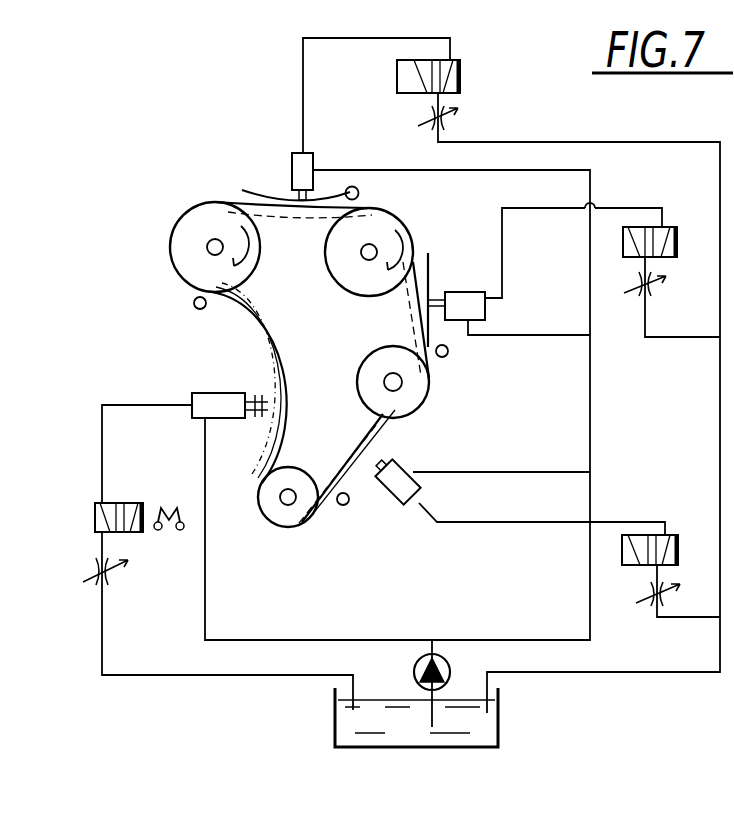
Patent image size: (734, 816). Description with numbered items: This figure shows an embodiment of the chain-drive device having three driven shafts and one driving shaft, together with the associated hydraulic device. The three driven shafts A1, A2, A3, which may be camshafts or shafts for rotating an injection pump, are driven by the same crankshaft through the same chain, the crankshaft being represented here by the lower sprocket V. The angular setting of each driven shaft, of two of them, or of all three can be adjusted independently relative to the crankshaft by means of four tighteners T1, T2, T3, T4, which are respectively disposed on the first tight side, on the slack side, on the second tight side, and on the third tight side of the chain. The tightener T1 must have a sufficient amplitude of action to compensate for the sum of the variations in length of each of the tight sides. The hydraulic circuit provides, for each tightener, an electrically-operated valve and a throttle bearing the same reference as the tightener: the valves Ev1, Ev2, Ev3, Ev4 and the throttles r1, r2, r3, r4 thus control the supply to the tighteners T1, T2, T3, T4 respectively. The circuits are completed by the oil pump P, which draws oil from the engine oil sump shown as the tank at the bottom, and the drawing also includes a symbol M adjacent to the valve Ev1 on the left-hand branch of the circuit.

The driven shaft A1 is at (408, 403).
The driven shaft A2 is at (355, 281).
The driven shaft A3 is at (206, 278).
The roller V is at (281, 519).
The tightener T1 is at (230, 393).
The tightener T2 is at (395, 494).
The tightener T3 is at (456, 290).
The tightener T4 is at (281, 176).
The electrically-operated valve Ev1 is at (122, 501).
The electrically-operated valve Ev2 is at (649, 531).
The electrically-operated valve Ev3 is at (660, 221).
The electrically-operated valve Ev4 is at (453, 69).
The throttle r1 is at (106, 581).
The throttle r2 is at (664, 599).
The throttle r3 is at (650, 297).
The throttle r4 is at (449, 122).
The motor M is at (169, 519).
The oil pump P is at (450, 662).